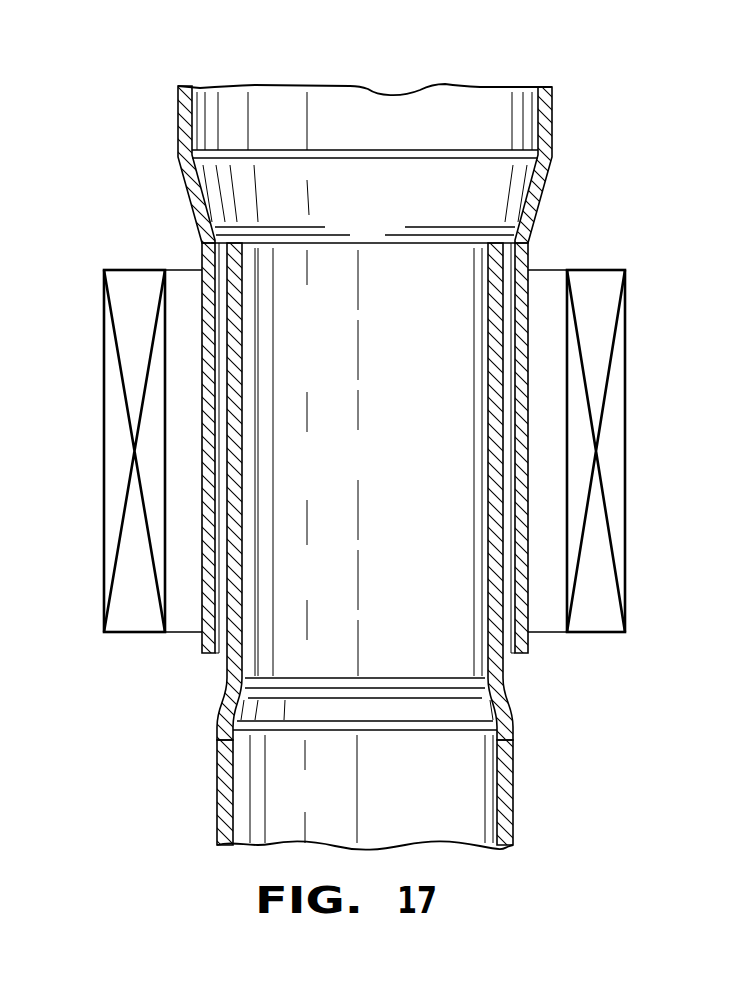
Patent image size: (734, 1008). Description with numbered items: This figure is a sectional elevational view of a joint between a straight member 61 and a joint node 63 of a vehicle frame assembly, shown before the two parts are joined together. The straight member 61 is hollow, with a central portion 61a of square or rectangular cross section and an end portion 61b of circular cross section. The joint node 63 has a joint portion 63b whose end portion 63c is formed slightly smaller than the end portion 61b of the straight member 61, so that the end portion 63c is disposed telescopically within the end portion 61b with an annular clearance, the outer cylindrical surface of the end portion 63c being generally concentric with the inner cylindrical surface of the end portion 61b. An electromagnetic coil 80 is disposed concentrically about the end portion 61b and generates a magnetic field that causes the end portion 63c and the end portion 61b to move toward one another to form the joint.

The straight member 61 is at (414, 356).
The central portion 61a is at (550, 155).
The end portion 61b is at (213, 385).
The joint node 63 is at (313, 552).
The joint portion 63b is at (230, 817).
The end portion 63c is at (237, 459).
The electromagnetic coil 80 is at (615, 424).